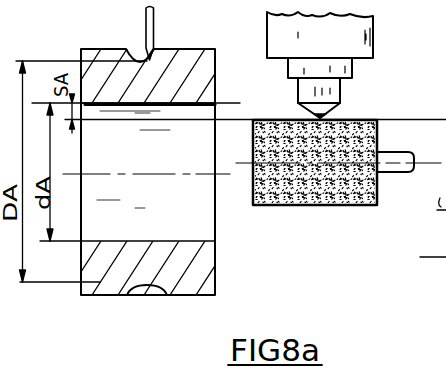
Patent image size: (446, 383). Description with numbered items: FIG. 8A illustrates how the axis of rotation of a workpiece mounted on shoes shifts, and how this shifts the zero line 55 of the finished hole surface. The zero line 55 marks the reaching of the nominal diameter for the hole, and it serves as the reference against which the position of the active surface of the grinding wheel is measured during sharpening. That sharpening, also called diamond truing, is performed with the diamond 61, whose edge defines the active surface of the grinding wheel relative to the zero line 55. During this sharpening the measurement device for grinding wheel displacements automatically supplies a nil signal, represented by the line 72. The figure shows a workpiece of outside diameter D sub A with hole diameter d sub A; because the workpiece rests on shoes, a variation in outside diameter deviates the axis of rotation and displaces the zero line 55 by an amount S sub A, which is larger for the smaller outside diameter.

The zero line 55 is at (226, 102).
The diamond 61 is at (342, 108).
The line 72 is at (415, 119).